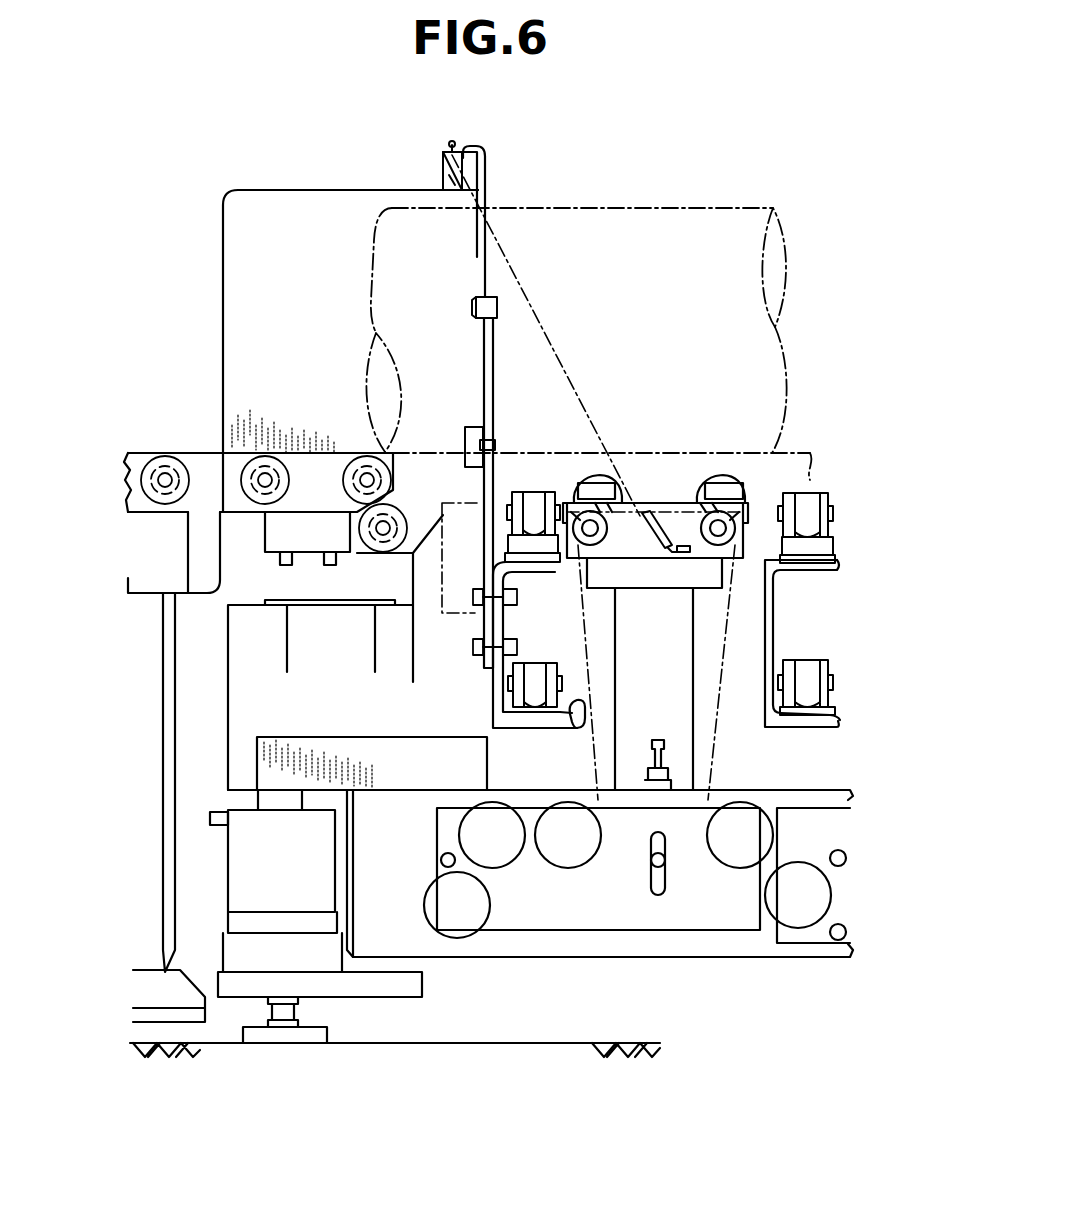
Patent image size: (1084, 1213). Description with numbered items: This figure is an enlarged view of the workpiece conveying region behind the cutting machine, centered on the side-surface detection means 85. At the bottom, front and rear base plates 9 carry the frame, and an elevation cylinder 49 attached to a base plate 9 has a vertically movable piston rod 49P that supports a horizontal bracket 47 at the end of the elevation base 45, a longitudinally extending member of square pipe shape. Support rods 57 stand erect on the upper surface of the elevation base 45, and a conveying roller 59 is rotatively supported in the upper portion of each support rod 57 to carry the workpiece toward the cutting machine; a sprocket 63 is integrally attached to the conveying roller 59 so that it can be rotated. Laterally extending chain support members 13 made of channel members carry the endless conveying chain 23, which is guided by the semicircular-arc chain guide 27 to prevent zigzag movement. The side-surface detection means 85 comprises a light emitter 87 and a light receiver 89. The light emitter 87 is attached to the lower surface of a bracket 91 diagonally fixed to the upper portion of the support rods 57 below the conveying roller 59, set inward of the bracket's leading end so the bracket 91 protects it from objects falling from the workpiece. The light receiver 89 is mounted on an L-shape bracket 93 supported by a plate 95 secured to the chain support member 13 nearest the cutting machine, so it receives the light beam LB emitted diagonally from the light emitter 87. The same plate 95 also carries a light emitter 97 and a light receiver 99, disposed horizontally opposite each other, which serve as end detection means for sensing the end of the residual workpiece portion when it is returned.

The base plate 9 is at (422, 985).
The chain support member 13 is at (497, 710).
The conveying chain 23 is at (530, 506).
The chain guide 27 is at (545, 545).
The elevation base 45 is at (610, 940).
The bracket 47 is at (357, 757).
The elevation cylinder 49 is at (280, 881).
The piston rod 49P is at (273, 802).
The support rod 57 is at (670, 690).
The conveying roller 59 is at (741, 483).
The sprocket 63 is at (600, 560).
The side-surface detection means 85 is at (409, 134).
The light emitter 87 is at (648, 558).
The light receiver 89 is at (446, 174).
The bracket 91 is at (661, 512).
The L-shape bracket 93 is at (487, 197).
The plate 95 is at (486, 327).
The light emitter 97 is at (467, 433).
The light receiver 99 is at (448, 405).
The light beam LB is at (559, 364).